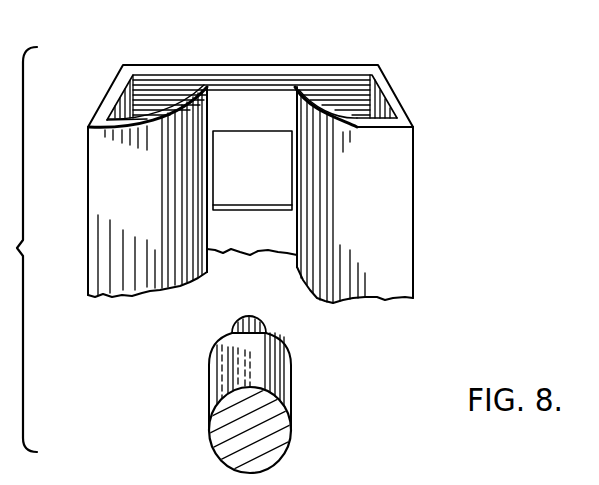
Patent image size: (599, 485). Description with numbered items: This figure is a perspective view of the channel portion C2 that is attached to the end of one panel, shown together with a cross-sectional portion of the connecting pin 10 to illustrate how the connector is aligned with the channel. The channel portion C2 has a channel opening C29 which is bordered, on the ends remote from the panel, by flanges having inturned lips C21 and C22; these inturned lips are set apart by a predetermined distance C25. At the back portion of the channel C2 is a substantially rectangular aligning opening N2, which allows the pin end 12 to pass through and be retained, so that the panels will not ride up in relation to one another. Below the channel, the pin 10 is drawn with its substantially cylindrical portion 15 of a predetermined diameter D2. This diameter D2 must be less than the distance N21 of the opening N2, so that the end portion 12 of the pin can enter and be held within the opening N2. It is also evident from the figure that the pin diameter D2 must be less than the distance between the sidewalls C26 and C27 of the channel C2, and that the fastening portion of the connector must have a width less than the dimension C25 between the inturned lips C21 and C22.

The channel portion C2 is at (393, 100).
The channel opening C29 is at (147, 88).
The inturned lip C21 is at (193, 90).
The inturned lip C22 is at (315, 110).
The sidewall C27 is at (197, 179).
The sidewall C26 is at (306, 179).
The opening N2 is at (243, 158).
The distance of opening N21 is at (233, 142).
The predetermined distance C25 is at (287, 232).
The connecting pin 10 is at (290, 360).
The pin end 12 is at (268, 328).
The substantially cylindrical portion 15 is at (295, 388).
The pin diameter D2 is at (153, 379).